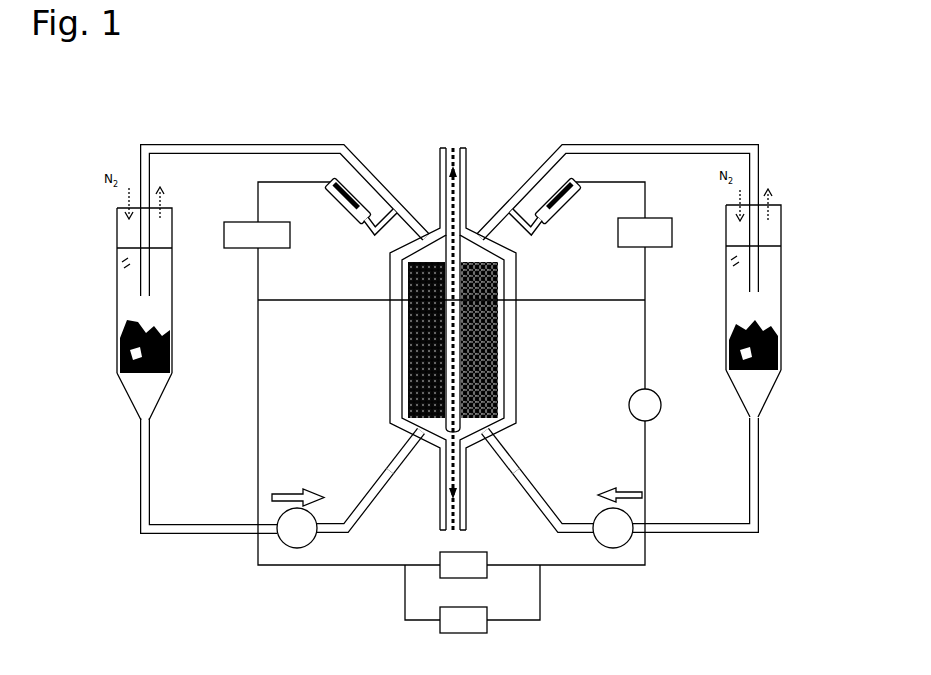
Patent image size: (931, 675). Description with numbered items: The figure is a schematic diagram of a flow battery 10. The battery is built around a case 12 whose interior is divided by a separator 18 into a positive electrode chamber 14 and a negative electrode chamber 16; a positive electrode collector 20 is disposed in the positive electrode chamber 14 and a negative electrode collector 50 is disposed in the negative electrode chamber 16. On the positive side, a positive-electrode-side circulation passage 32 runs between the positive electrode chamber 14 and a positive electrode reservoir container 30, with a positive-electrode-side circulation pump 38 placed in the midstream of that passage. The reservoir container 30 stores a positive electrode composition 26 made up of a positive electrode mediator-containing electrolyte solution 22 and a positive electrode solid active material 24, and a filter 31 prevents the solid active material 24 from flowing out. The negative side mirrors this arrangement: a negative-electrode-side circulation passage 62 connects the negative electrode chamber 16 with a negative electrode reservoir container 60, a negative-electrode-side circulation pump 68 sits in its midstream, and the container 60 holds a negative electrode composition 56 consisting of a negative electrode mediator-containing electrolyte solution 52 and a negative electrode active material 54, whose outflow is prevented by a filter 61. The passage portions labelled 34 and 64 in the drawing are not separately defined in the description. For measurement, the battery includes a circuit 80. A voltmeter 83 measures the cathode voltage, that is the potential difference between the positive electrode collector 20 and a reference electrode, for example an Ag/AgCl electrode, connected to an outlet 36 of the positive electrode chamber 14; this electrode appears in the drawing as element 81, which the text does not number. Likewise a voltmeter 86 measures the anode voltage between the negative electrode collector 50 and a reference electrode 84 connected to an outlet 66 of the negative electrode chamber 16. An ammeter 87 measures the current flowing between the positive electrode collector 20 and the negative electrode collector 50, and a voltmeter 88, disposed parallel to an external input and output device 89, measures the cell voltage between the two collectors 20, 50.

The flow battery 10 is at (730, 118).
The case 12 is at (507, 311).
The positive electrode chamber 14 is at (392, 430).
The negative electrode chamber 16 is at (508, 430).
The separator 18 is at (472, 333).
The positive electrode collector 20 is at (408, 360).
The positive electrode mediator-containing electrolyte solution 22 is at (134, 310).
The positive electrode solid active material 24 is at (121, 326).
The positive electrode composition 26 is at (75, 273).
The positive electrode reservoir container 30 is at (117, 223).
The filter 31 is at (138, 372).
The positive-electrode-side circulation passage 32 is at (138, 509).
The feed pipe 34 is at (397, 480).
The outlet 36 is at (404, 206).
The positive-electrode-side circulation pump 38 is at (282, 547).
The negative electrode collector 50 is at (490, 337).
The negative electrode mediator-containing electrolyte solution 52 is at (761, 302).
The negative electrode active material 54 is at (765, 321).
The negative electrode composition 56 is at (835, 267).
The negative electrode reservoir container 60 is at (783, 216).
The filter 61 is at (760, 370).
The negative-electrode-side circulation passage 62 is at (759, 506).
The feed pipe 64 is at (521, 478).
The outlet 66 is at (502, 206).
The negative-electrode-side circulation pump 68 is at (607, 548).
The circuit 80 is at (336, 568).
The cathode reference electrode 81 is at (342, 217).
The voltmeter 83 is at (240, 250).
The reference electrode 84 is at (564, 217).
The voltmeter 86 is at (672, 238).
The ammeter 87 is at (661, 410).
The voltmeter 88 is at (458, 633).
The external input and output device 89 is at (458, 578).